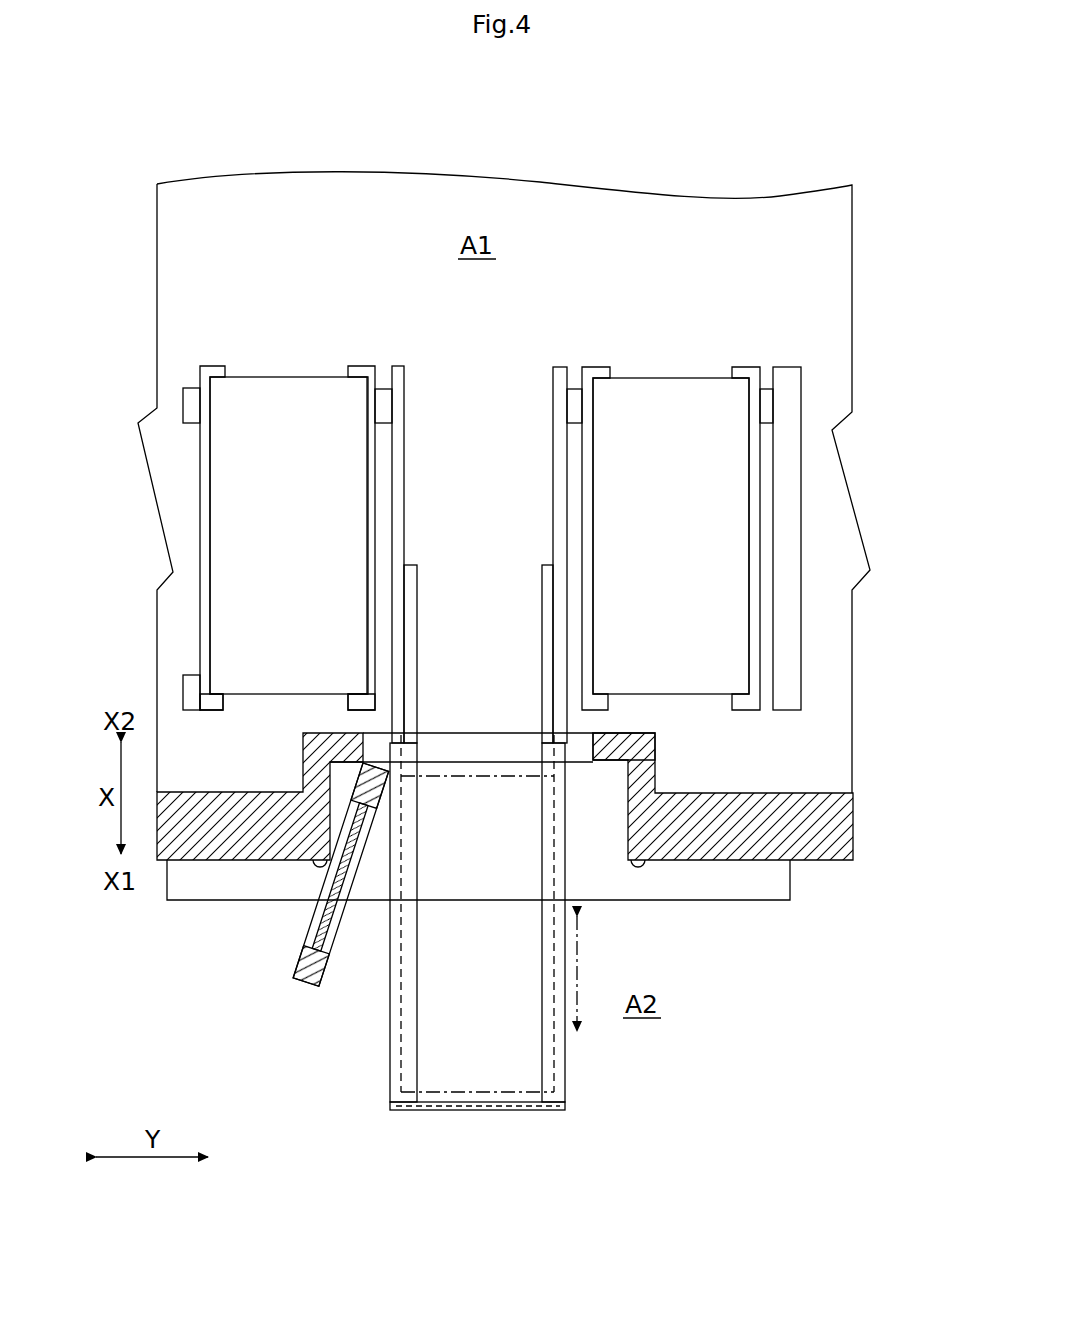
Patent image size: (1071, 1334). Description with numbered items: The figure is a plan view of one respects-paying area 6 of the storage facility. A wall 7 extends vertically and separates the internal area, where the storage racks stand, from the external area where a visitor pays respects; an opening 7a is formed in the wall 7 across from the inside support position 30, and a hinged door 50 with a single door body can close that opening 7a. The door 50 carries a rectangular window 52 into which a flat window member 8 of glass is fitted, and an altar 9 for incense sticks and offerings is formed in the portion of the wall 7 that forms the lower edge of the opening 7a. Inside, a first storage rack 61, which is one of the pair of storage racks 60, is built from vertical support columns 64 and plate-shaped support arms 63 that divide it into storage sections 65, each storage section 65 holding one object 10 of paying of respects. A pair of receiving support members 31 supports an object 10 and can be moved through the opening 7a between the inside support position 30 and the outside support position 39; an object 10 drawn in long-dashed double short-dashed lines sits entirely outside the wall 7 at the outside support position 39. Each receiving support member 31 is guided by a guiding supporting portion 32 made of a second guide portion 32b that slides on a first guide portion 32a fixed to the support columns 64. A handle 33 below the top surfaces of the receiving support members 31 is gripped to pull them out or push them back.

The respects-paying area 6 is at (705, 1133).
The wall 7 is at (817, 853).
The opening 7a is at (583, 738).
The window member 8 is at (318, 912).
The altar 9 is at (727, 898).
The object of paying of respects 10 is at (265, 390).
The inside support position 30 is at (494, 407).
The receiving support member 31 is at (547, 1052).
The guiding supporting portion 32 is at (479, 554).
The first guide portion 32a is at (559, 525).
The second guide portion 32b is at (548, 665).
The handle 33 is at (525, 1093).
The outside support position 39 is at (467, 1060).
The door 50 is at (300, 990).
The window 52 is at (345, 950).
The storage rack 60 is at (531, 482).
The first storage rack 61 is at (824, 534).
The support arm 63 is at (215, 700).
The support column 64 is at (192, 405).
The storage section 65 is at (306, 402).